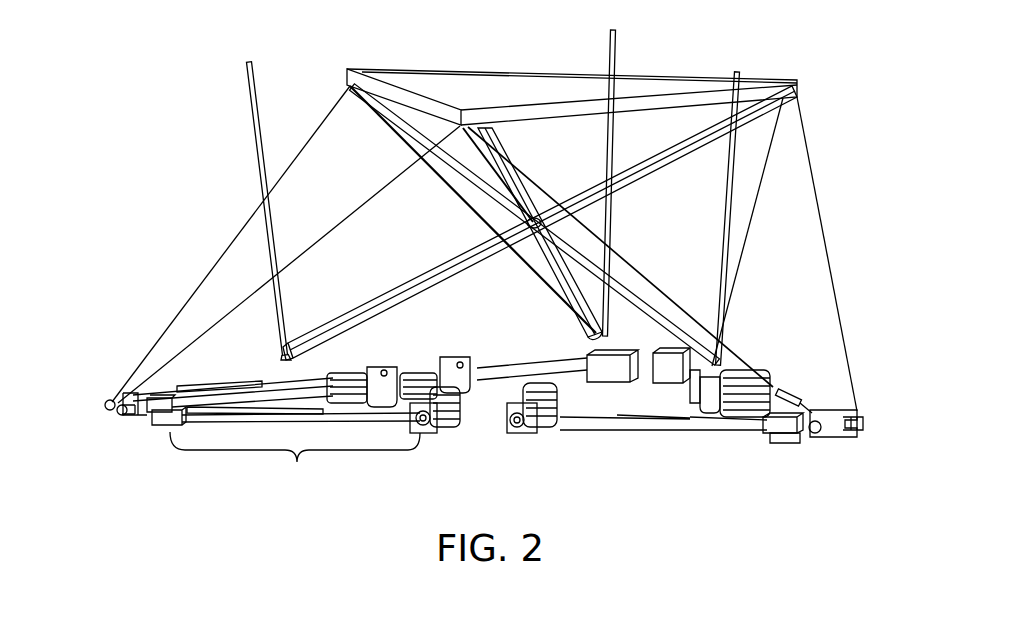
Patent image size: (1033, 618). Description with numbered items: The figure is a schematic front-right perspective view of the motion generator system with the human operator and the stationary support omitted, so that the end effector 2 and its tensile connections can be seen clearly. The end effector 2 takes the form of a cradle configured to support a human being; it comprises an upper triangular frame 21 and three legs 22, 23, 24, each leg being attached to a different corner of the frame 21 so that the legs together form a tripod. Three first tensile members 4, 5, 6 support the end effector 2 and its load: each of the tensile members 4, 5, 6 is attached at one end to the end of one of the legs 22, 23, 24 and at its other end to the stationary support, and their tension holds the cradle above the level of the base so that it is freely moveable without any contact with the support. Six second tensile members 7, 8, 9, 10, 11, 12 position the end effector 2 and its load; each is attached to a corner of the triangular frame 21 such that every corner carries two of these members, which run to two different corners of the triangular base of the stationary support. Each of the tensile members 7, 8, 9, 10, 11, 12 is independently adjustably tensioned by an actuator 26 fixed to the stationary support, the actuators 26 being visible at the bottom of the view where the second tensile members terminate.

The end effector 2 is at (530, 73).
The upper triangular frame 21 is at (432, 72).
The first tensile member 4 is at (252, 98).
The first tensile member 5 is at (619, 47).
The first tensile member 6 is at (737, 155).
The second tensile member 7 is at (234, 240).
The second tensile member 8 is at (257, 290).
The second tensile member 9 is at (749, 190).
The second tensile member 10 is at (820, 246).
The second tensile member 11 is at (623, 252).
The second tensile member 12 is at (487, 214).
The leg 22 is at (663, 333).
The leg 23 is at (437, 283).
The leg 24 is at (587, 323).
The actuator 26 is at (297, 462).